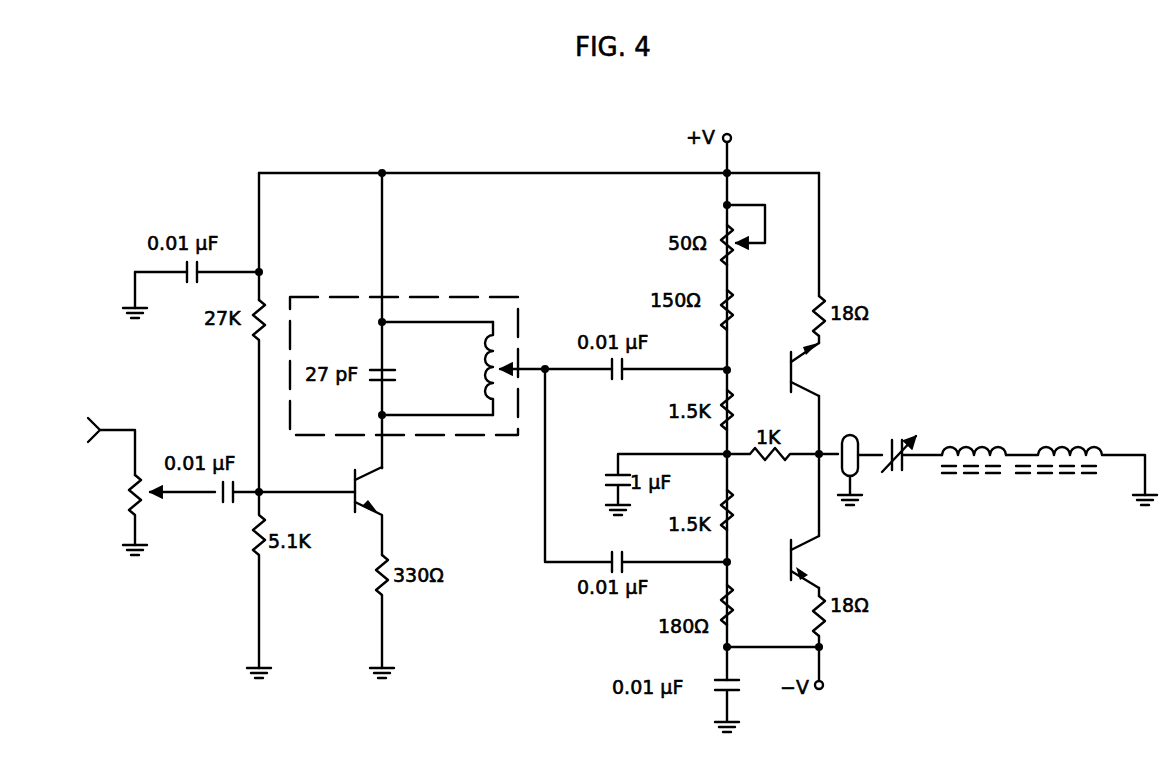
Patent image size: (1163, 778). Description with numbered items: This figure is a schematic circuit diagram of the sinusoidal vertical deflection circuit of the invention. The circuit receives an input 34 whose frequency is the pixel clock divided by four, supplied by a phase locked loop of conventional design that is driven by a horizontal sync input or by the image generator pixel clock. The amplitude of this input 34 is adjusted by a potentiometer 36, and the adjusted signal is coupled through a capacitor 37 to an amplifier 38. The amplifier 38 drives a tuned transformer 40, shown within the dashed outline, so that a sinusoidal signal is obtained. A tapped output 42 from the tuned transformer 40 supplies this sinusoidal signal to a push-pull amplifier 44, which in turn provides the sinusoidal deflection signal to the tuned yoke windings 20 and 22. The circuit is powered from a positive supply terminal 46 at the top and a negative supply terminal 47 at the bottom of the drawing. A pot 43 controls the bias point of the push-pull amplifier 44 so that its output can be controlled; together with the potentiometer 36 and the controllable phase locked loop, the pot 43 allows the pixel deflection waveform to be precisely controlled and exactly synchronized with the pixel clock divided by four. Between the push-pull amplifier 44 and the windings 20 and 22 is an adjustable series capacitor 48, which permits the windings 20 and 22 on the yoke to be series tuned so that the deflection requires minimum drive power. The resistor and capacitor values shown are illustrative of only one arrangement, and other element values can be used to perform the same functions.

The vertical deflection coil 20 is at (990, 438).
The vertical deflection coil 22 is at (1083, 438).
The input 34 is at (100, 414).
The potentiometer 36 is at (148, 506).
The capacitor 37 is at (228, 506).
The amplifier 38 is at (378, 490).
The tuned transformer 40 is at (486, 440).
The tapped output 42 is at (486, 374).
The pot 43 is at (738, 252).
The push-pull amplifier 44 is at (875, 381).
The positive supply terminal 46 is at (733, 137).
The negative supply terminal 47 is at (826, 687).
The series capacitor 48 is at (898, 478).